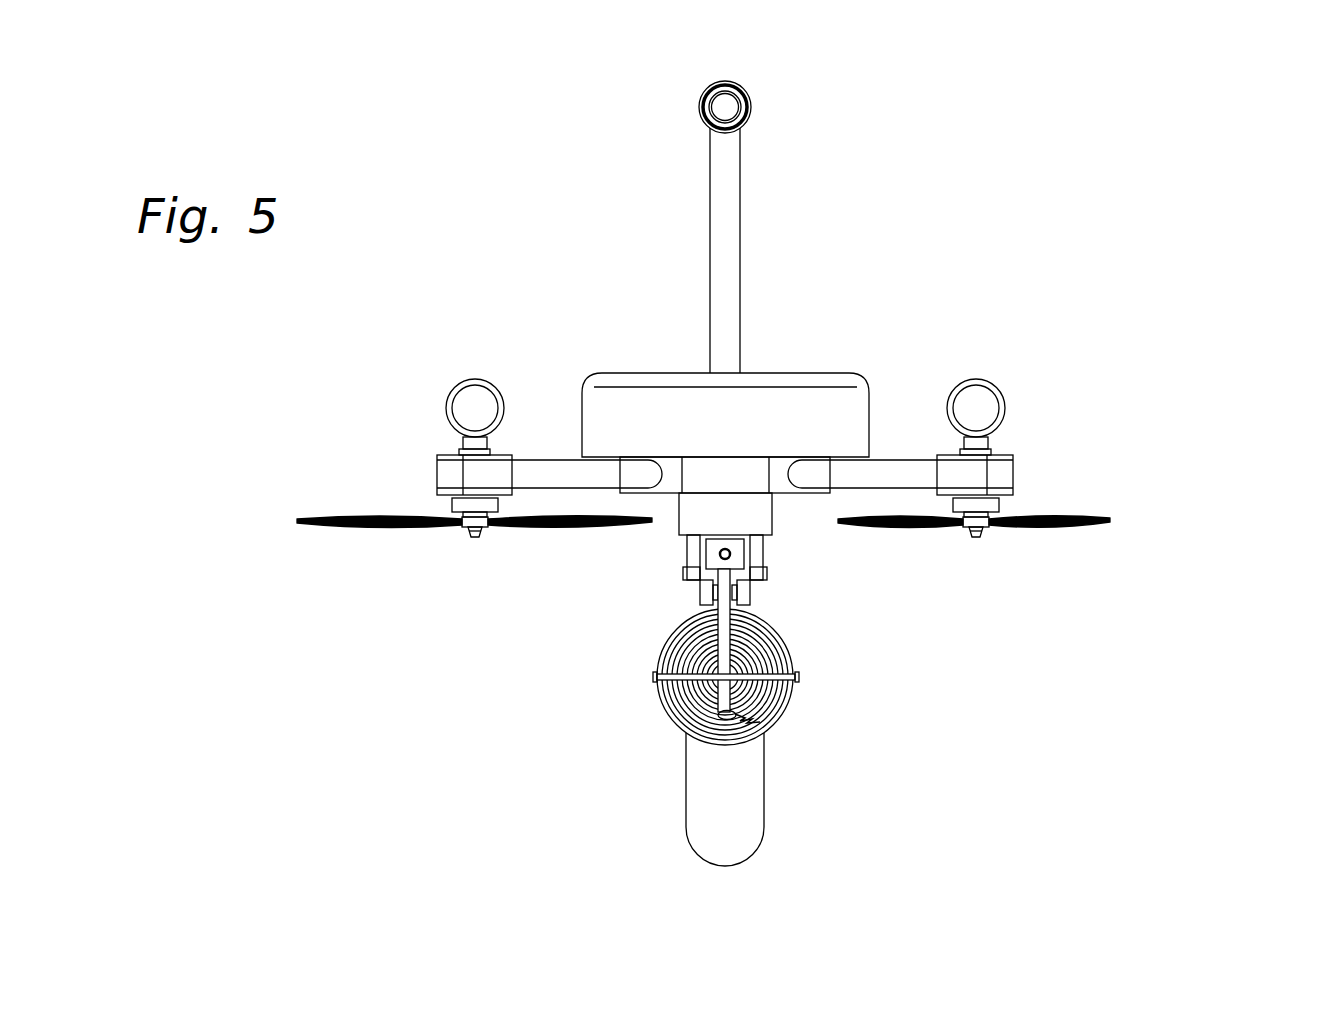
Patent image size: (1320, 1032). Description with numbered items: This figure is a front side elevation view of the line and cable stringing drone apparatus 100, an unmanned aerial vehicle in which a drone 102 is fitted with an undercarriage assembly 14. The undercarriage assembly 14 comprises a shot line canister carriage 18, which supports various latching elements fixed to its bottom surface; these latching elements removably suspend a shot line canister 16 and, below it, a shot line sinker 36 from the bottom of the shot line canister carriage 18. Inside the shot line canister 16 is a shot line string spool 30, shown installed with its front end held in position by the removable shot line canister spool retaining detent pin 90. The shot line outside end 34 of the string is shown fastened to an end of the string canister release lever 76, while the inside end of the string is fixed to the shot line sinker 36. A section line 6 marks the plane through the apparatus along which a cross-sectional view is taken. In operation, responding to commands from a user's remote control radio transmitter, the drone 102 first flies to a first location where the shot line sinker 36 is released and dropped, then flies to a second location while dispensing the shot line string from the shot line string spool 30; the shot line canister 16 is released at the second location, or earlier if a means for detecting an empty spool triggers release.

The section line 6- 6 is at (725, 62).
The line and cable stringing drone apparatus 100 is at (1178, 179).
The drone 102 is at (811, 373).
The undercarriage assembly 14 is at (678, 518).
The shot line canister carriage 18 is at (767, 538).
The string canister release lever 76 is at (724, 588).
The shot line canister 16 is at (662, 712).
The shot line string spool 30 is at (677, 652).
The shot line canister spool retaining detent pin 90 is at (802, 676).
The shot line outside end 34 is at (724, 720).
The shot line sinker 36 is at (686, 790).